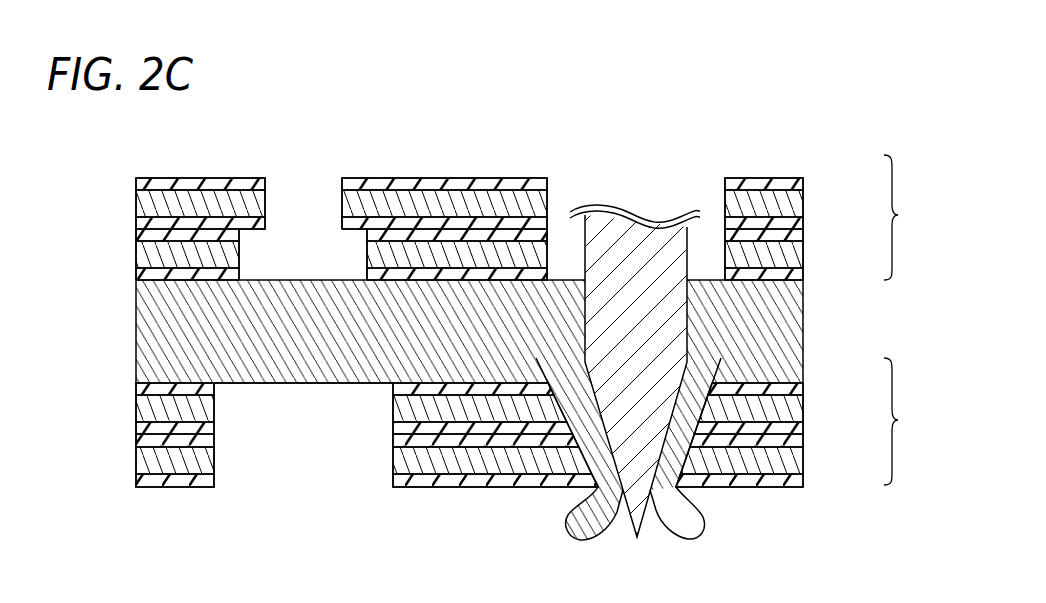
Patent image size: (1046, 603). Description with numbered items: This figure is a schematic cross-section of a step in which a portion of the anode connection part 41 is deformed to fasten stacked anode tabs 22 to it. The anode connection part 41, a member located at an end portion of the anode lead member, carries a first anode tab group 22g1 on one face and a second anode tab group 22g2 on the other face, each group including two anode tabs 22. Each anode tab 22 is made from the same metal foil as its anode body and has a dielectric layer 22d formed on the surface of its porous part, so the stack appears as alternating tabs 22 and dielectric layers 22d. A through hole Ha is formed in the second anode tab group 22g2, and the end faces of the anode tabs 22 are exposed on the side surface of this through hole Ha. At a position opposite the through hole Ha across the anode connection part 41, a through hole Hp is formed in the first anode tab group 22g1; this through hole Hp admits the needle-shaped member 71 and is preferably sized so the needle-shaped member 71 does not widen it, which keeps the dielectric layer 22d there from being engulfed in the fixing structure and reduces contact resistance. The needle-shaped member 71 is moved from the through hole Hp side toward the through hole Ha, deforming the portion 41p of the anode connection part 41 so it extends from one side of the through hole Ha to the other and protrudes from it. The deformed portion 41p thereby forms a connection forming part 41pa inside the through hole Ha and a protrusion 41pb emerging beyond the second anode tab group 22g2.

The anode tab 22 is at (805, 203).
The dielectric layer 22d is at (805, 181).
The first anode tab group 22g1 is at (542, 217).
The second anode tab group 22g2 is at (543, 422).
The anode connection part 41 is at (805, 333).
The portion of the anode connection part 41p is at (329, 393).
The connection forming part 41pa is at (593, 455).
The protrusion 41pb is at (714, 530).
The needle-shaped member 71 is at (640, 206).
The through hole Ha is at (307, 157).
The through hole Hp is at (701, 170).